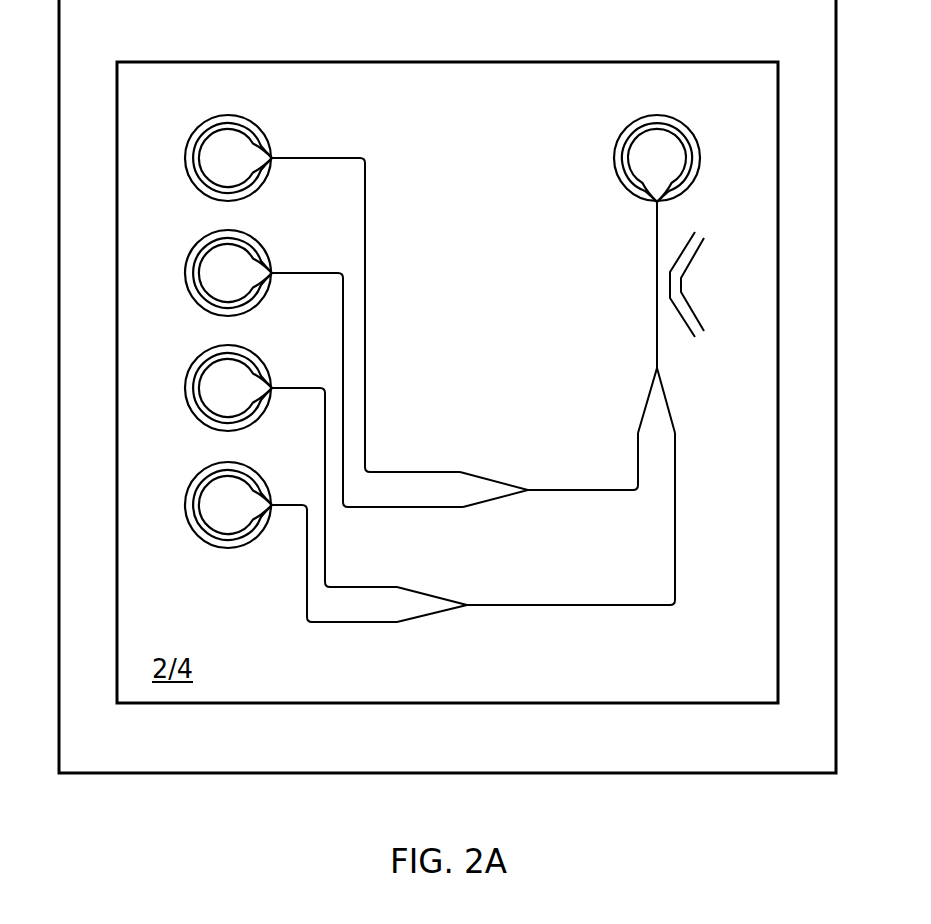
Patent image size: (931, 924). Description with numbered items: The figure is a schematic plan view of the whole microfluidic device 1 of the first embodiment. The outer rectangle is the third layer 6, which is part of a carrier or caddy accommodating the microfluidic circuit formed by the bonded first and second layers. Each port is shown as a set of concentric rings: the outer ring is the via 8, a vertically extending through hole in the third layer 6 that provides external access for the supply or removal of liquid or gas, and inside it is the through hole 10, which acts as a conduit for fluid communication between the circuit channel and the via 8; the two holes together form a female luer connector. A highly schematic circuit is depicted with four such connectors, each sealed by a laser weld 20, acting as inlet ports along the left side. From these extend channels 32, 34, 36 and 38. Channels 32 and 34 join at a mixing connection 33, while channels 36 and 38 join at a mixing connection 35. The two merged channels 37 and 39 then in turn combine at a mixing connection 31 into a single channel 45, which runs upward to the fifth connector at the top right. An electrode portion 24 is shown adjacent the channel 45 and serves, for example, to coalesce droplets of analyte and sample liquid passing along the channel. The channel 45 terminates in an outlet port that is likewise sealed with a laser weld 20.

The microfluidic device 1 is at (682, 785).
The third layer 6 is at (79, 36).
The via 8 is at (195, 157).
The through hole 10 is at (201, 168).
The laser weld 20 is at (203, 122).
The electrode portion 24 is at (681, 283).
The mixing connection 31 is at (656, 353).
The channel 32 is at (322, 157).
The mixing connection 33 is at (531, 490).
The channel 34 is at (297, 271).
The mixing connection 35 is at (469, 604).
The channel 36 is at (293, 386).
The merged channel 37 is at (582, 491).
The channel 38 is at (281, 503).
The merged channel 39 is at (591, 604).
The channel 45 is at (656, 287).